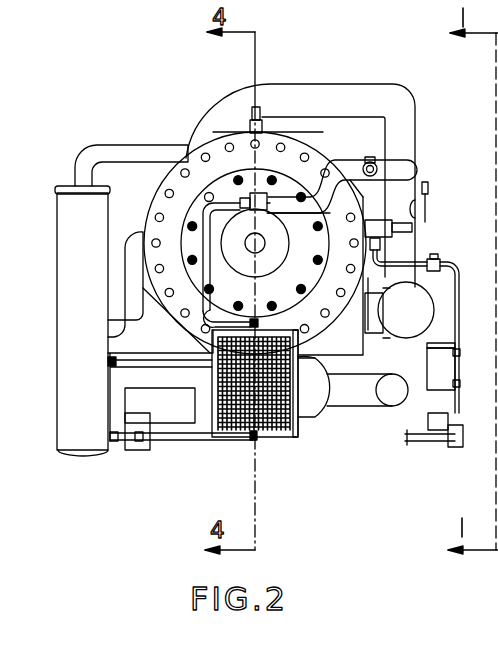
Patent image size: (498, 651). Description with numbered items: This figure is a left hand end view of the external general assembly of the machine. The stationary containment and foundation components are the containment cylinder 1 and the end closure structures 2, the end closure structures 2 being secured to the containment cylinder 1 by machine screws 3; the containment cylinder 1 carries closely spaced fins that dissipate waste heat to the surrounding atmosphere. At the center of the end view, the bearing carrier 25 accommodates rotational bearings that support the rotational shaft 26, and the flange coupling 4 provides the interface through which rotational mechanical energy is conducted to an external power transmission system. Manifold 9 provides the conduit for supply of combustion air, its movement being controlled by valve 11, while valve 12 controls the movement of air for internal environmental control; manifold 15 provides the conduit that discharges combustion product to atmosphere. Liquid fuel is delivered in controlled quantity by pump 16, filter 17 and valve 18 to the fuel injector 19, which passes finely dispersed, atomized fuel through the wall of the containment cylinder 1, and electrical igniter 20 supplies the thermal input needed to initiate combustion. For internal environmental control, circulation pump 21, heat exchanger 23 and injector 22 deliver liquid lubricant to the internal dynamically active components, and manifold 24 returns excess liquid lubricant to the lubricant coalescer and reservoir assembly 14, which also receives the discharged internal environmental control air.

The containment cylinder 1 is at (213, 133).
The end closure structures 2 is at (152, 213).
The machine screws 3 is at (160, 218).
The flange coupling 4 is at (313, 177).
The manifold 9 is at (408, 167).
The valve 11 is at (428, 187).
The valve 12 is at (377, 167).
The lubricant coalescer and reservoir assembly 14 is at (95, 453).
The manifold 15 is at (317, 423).
The pump 16 is at (450, 445).
The filter 17 is at (437, 392).
The valve 18 is at (440, 260).
The fuel injector 19 is at (420, 220).
The electrical igniter 20 is at (252, 110).
The circulation pump 21 is at (142, 450).
The injector 22 is at (293, 192).
The heat exchanger 23 is at (280, 437).
The manifold 24 is at (118, 365).
The bearing carrier 25 is at (258, 192).
The rotational shaft 26 is at (187, 160).